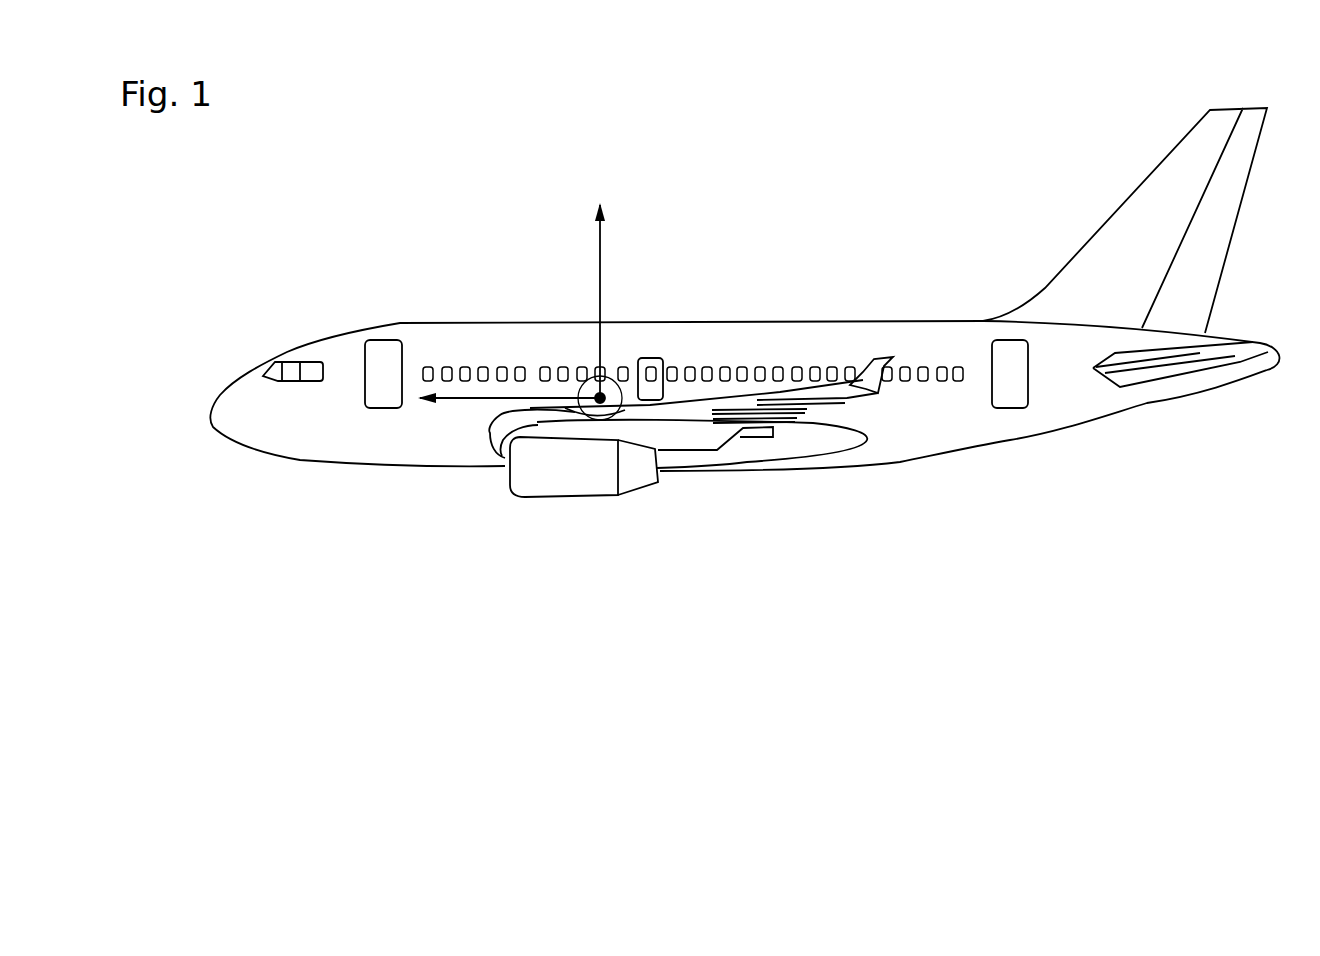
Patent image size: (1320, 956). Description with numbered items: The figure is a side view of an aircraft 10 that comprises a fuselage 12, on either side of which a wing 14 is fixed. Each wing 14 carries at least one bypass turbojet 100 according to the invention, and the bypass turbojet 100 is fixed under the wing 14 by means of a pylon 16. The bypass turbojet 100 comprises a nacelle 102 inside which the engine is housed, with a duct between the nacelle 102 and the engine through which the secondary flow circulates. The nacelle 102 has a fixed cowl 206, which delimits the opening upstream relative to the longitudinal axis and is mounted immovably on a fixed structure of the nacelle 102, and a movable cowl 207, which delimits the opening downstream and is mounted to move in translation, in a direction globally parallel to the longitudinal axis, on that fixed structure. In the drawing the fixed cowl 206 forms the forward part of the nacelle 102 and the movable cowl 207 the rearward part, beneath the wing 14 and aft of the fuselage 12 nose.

The aircraft 10 is at (934, 229).
The fuselage 12 is at (908, 430).
The wing 14 is at (790, 393).
The pylon 16 is at (695, 435).
The bypass turbojet 100 is at (505, 569).
The nacelle 102 is at (418, 529).
The fixed cowl 206 is at (567, 475).
The movable cowl 207 is at (632, 472).